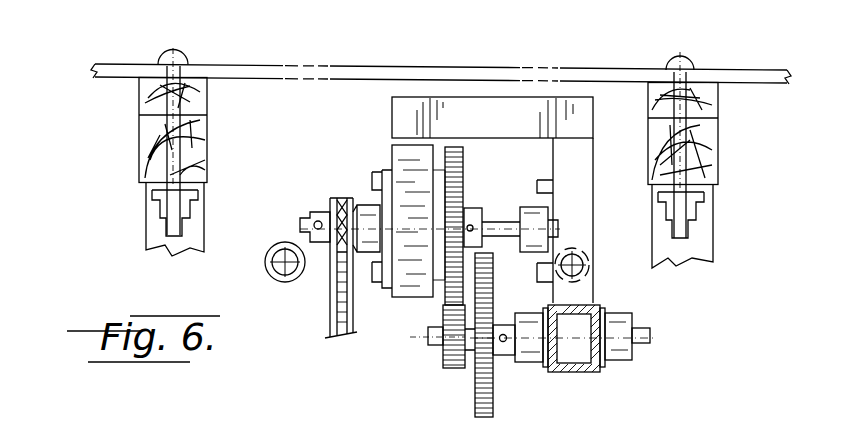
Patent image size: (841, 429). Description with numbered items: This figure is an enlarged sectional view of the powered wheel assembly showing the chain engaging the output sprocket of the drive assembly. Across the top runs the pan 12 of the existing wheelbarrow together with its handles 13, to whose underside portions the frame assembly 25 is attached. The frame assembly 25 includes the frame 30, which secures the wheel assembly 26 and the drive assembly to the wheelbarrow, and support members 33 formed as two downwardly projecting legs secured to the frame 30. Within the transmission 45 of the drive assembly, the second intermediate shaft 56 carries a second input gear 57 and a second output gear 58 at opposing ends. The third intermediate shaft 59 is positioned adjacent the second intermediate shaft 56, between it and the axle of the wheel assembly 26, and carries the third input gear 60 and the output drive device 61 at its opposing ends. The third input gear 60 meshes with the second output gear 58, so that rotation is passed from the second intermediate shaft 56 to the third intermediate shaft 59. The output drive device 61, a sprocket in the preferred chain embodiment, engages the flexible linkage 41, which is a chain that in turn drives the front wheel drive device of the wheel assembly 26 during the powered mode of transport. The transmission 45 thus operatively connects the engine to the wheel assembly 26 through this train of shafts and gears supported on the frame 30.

The pan 12 is at (107, 80).
The handles 13 is at (148, 150).
The support member 33 is at (148, 228).
The frame assembly 25 is at (600, 108).
The wheel assembly 26 is at (276, 285).
The third intermediate shaft 59 is at (497, 222).
The third input gear 60 is at (450, 182).
The output drive device 61 is at (335, 200).
The flexible linkage 41 is at (330, 274).
The second output gear 58 is at (455, 366).
The transmission 45 is at (435, 310).
The second input gear 57 is at (495, 396).
The second intermediate shaft 56 is at (636, 332).
The frame 30 is at (595, 372).